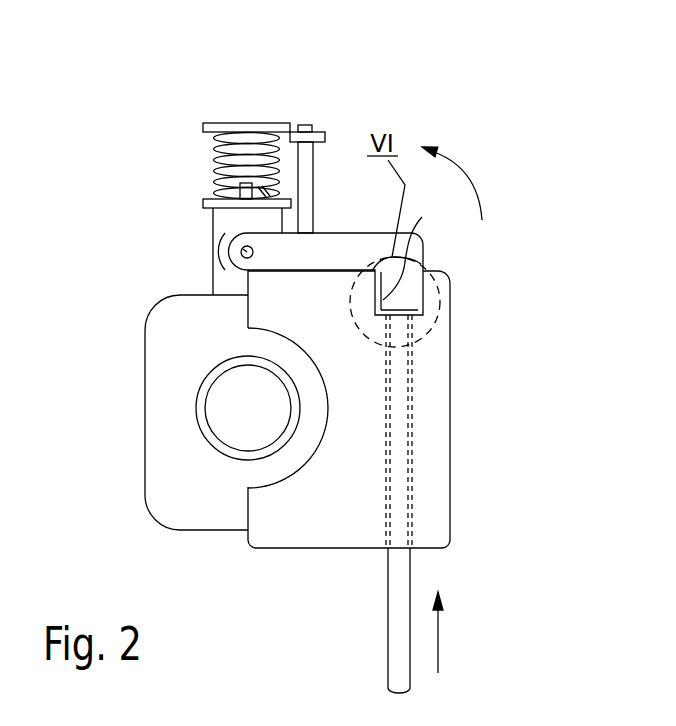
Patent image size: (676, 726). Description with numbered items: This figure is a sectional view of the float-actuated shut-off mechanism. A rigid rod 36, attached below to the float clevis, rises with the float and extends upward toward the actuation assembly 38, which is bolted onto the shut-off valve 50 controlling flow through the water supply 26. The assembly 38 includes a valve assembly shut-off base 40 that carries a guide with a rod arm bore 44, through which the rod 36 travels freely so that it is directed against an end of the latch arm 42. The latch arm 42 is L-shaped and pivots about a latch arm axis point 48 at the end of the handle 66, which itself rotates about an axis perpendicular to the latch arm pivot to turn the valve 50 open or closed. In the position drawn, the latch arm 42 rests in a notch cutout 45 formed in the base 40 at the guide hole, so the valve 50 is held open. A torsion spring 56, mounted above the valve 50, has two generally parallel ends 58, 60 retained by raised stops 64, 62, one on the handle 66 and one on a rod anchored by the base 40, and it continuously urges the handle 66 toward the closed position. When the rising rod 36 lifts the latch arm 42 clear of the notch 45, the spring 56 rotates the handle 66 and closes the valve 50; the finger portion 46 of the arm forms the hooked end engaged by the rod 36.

The water supply 26 is at (195, 408).
The rod 36 is at (388, 653).
The actuation assembly 38 is at (546, 284).
The valve assembly shut-off base 40 is at (450, 450).
The latch arm 42 is at (427, 283).
The rod arm bore 44 is at (412, 407).
The notch cutout 45 is at (430, 308).
The hook finger 46 is at (418, 244).
The latch arm axis point 48 is at (243, 249).
The shut-off valve 50 is at (145, 453).
The torsion spring 56 is at (213, 150).
The spring end 58 is at (326, 131).
The spring end 60 is at (281, 183).
The raised stop 62 is at (303, 124).
The raised stop 64 is at (241, 186).
The handle 66 is at (212, 277).